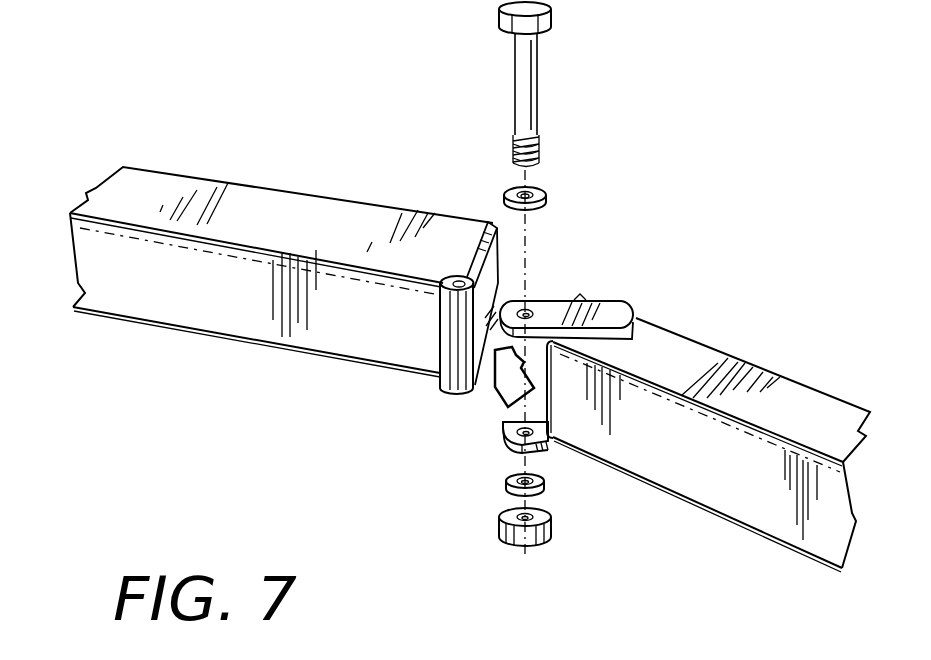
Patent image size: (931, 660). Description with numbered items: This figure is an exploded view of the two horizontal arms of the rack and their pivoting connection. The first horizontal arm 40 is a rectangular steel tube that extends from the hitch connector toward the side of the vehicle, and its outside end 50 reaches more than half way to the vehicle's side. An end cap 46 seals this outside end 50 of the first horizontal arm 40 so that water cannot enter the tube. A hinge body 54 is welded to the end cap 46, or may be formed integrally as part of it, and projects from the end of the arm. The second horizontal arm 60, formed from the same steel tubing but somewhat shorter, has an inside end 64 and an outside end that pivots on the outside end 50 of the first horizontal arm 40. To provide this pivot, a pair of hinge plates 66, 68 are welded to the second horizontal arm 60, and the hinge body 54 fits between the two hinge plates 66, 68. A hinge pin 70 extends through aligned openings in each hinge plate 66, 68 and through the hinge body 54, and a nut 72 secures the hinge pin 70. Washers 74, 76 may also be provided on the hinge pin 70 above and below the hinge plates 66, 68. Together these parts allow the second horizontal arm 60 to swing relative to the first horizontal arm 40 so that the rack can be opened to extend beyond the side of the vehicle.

The first horizontal arm 40 is at (143, 303).
The end cap 46 is at (503, 268).
The outside end 50 is at (328, 328).
The hinge body 54 is at (443, 382).
The second horizontal arm 60 is at (782, 393).
The inside end 64 is at (667, 345).
The hinge plate 66 is at (553, 302).
The hinge plate 68 is at (553, 450).
The hinge pin 70 is at (535, 43).
The nut 72 is at (512, 540).
The washer 74 is at (540, 185).
The washer 76 is at (505, 480).